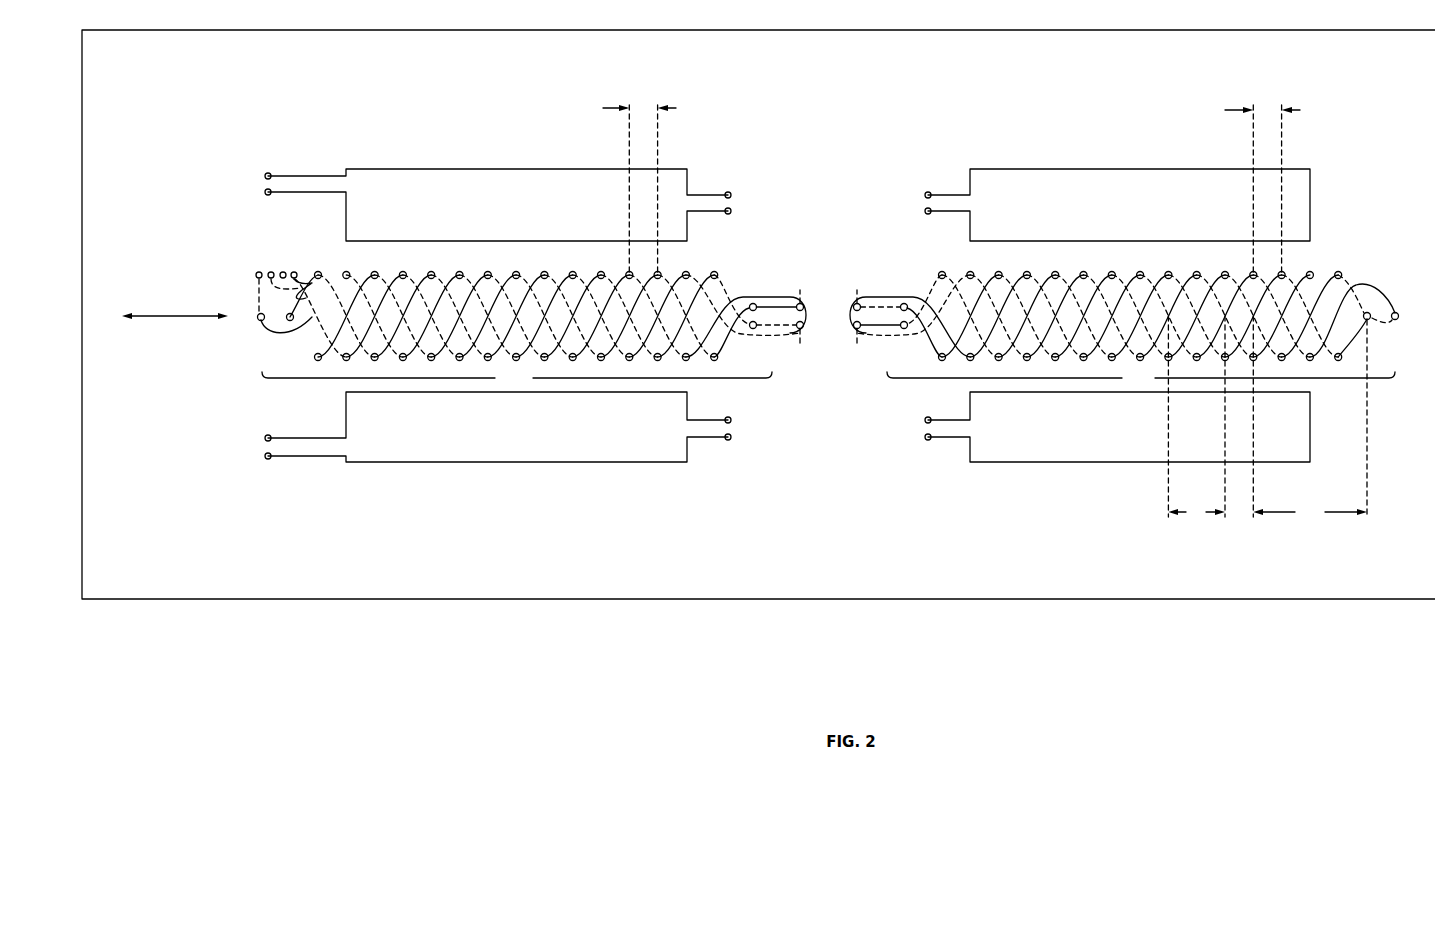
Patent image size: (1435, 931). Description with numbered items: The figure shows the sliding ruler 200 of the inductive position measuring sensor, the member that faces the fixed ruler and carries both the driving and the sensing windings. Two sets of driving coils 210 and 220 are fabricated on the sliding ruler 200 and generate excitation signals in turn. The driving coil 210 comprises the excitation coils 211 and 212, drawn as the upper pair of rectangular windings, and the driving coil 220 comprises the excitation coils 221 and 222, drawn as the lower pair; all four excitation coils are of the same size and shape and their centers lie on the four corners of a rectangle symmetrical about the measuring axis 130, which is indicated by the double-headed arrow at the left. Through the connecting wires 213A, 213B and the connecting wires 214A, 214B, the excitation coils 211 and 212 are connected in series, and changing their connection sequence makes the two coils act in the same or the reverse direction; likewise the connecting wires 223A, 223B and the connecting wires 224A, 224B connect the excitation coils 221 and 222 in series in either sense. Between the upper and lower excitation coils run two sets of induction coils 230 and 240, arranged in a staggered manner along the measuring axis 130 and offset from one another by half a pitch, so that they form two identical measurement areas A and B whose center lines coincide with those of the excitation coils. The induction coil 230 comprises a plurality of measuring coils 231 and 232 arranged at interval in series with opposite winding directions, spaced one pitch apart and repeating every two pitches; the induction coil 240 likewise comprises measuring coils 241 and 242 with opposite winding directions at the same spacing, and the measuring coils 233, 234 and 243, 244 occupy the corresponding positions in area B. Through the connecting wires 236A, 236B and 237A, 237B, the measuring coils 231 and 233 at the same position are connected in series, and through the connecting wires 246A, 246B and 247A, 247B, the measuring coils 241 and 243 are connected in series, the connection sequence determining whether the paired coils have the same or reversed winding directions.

The sliding ruler 200 is at (147, 587).
The measuring axis 130 is at (177, 313).
The driving coil 210 is at (787, 167).
The excitation coil 211 is at (531, 172).
The excitation coil 212 is at (1082, 172).
The connecting wire 213A is at (732, 192).
The connecting wire 213B is at (732, 208).
The connecting wire 214A is at (924, 192).
The connecting wire 214B is at (924, 208).
The driving coil 220 is at (787, 461).
The excitation coil 221 is at (531, 459).
The excitation coil 222 is at (1082, 459).
The connecting wire 223A is at (732, 423).
The connecting wire 223B is at (732, 440).
The connecting wire 224A is at (924, 423).
The connecting wire 224B is at (924, 440).
The induction coil 230 is at (604, 307).
The induction coil 240 is at (1085, 311).
The measuring coil 231 is at (396, 362).
The measuring coil 232 is at (453, 362).
The measuring coil 233 is at (1020, 362).
The measuring coil 234 is at (1077, 362).
The measuring coil 241 is at (368, 362).
The measuring coil 242 is at (424, 362).
The measuring coil 243 is at (992, 362).
The measuring coil 244 is at (1049, 362).
The connecting wire 236A is at (789, 290).
The connecting wire 236B is at (788, 343).
The connecting wire 237A is at (858, 290).
The connecting wire 237B is at (857, 343).
The connecting wire 246A is at (753, 290).
The connecting wire 246B is at (752, 343).
The connecting wire 247A is at (893, 290).
The connecting wire 247B is at (847, 385).